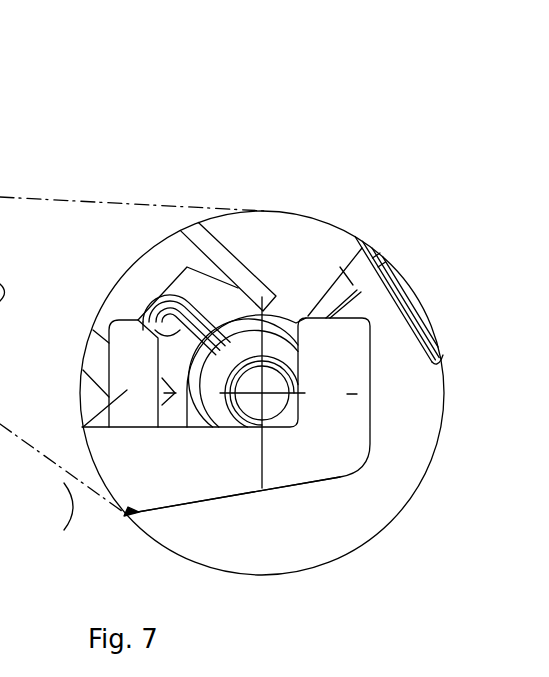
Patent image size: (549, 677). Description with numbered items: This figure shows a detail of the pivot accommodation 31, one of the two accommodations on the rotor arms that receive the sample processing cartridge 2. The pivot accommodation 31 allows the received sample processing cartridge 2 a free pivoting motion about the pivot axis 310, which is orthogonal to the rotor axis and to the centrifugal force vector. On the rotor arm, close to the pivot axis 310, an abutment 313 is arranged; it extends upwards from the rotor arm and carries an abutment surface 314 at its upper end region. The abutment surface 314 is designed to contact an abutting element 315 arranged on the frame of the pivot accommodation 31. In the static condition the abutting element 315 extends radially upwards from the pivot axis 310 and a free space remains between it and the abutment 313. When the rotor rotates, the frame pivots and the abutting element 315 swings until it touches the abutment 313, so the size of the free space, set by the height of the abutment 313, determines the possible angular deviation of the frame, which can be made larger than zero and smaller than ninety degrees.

The sample processing cartridge 2 is at (0, 188).
The pivot accommodation 31 is at (371, 107).
The pivot axis 310 is at (262, 393).
The abutment 313 is at (88, 422).
The abutment surface 314 is at (142, 328).
The abutting element 315 is at (264, 302).